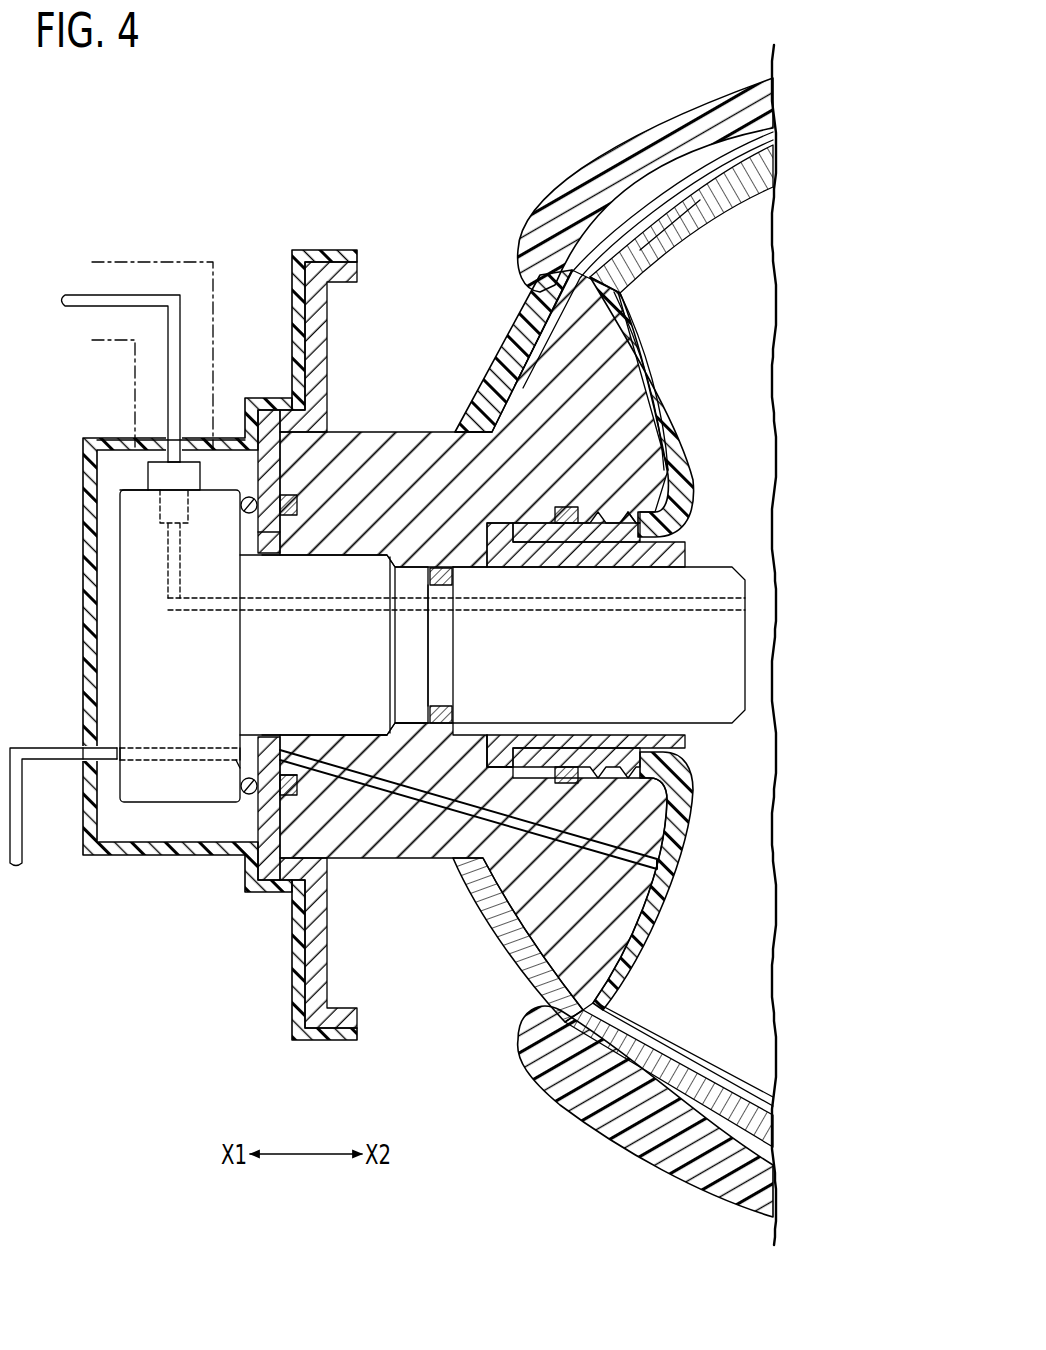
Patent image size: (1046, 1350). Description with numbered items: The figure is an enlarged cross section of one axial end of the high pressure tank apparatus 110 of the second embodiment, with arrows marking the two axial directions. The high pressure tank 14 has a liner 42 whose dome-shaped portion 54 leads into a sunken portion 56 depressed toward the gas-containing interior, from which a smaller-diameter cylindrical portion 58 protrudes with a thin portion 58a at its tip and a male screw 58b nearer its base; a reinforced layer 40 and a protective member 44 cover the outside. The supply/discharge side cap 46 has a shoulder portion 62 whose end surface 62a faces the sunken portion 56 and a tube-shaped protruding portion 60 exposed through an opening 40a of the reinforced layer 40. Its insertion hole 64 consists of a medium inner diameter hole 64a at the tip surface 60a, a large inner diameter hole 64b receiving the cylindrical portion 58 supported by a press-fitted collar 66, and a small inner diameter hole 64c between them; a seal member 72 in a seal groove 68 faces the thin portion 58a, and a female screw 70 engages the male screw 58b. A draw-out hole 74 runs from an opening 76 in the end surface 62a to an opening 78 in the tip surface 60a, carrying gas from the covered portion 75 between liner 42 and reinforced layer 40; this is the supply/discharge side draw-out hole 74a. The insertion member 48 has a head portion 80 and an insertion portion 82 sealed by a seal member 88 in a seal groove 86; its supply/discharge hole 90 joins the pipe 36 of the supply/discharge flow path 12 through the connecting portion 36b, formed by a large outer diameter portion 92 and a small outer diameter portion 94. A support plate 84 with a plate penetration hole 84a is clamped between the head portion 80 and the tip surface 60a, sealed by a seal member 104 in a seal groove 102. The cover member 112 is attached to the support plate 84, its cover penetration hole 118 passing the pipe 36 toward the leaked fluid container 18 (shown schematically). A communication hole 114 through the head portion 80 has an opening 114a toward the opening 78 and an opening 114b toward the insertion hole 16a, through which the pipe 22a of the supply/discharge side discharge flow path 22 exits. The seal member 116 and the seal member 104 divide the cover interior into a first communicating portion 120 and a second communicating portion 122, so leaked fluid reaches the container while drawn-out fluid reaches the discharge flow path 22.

The supply/discharge flow path 12 is at (76, 266).
The high pressure tank 14 is at (660, 1177).
The insertion hole 16a is at (78, 752).
The leaked fluid container 18 is at (191, 260).
The supply/discharge side discharge flow path 22 is at (38, 747).
The pipe 22a is at (160, 752).
The pipe 36 is at (130, 293).
The connecting portion 36b is at (190, 468).
The reinforced layer 40 is at (738, 170).
The opening 40a is at (465, 440).
The liner 42 is at (668, 250).
The protective member 44 is at (583, 190).
The supply/discharge side cap 46 is at (355, 428).
The insertion member 48 is at (113, 664).
The dome-shaped portion 54 is at (687, 212).
The sunken portion 56 is at (662, 398).
The cylindrical portion 58 is at (576, 477).
The thin portion 58a is at (555, 487).
The male screw 58b is at (612, 515).
The protruding portion 60 is at (385, 430).
The tip surface 60a is at (280, 550).
The shoulder portion 62 is at (508, 378).
The end surface 62a is at (625, 352).
The insertion hole 64 is at (333, 731).
The medium inner diameter hole 64a is at (358, 735).
The large inner diameter hole 64b is at (508, 760).
The small inner diameter hole 64c is at (413, 703).
The collar 66 is at (672, 557).
The seal groove 68 is at (572, 768).
The female screw 70 is at (637, 512).
The seal member 72 is at (557, 770).
The draw-out hole 74 is at (606, 934).
The supply/discharge side draw-out hole 74a is at (518, 940).
The covered portion 75 is at (727, 1113).
The opening 76 is at (660, 860).
The opening 78 is at (273, 743).
The head portion 80 is at (137, 632).
The insertion portion 82 is at (725, 648).
The support plate 84 is at (350, 272).
The plate penetration hole 84a is at (278, 533).
The seal groove 86 is at (428, 574).
The seal member 88 is at (440, 590).
The supply/discharge hole 90 is at (675, 612).
The large outer diameter portion 92 is at (157, 477).
The small outer diameter portion 94 is at (160, 512).
The seal groove 102 is at (290, 785).
The seal member 104 is at (288, 796).
The high pressure tank apparatus 110 is at (262, 111).
The cover member 112 is at (328, 252).
The communication hole 114 is at (186, 746).
The opening 114a is at (252, 738).
The opening 114b is at (110, 750).
The seal member 116 is at (240, 787).
The cover penetration hole 118 is at (147, 440).
The first communicating portion 120 is at (117, 482).
The second communicating portion 122 is at (240, 767).